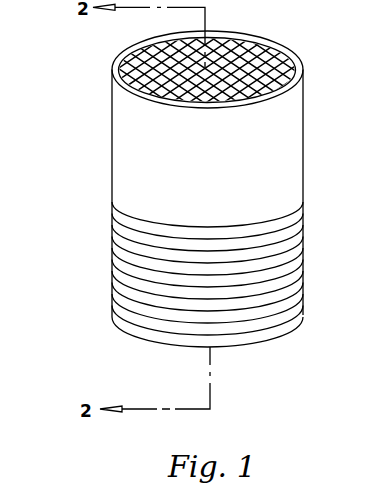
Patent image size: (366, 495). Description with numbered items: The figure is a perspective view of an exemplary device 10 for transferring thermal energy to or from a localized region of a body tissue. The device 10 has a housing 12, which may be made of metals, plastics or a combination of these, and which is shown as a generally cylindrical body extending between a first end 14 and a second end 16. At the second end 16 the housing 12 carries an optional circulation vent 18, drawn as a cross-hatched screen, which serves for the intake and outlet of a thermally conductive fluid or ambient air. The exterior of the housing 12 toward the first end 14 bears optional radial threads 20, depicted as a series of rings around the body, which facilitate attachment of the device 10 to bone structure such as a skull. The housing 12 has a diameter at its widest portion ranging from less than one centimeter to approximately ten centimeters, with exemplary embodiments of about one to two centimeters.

The device 10 is at (184, 189).
The housing 12 is at (111, 108).
The first end 14 is at (133, 333).
The second end 16 is at (298, 56).
The circulation vent 18 is at (123, 52).
The radial threads 20 is at (303, 259).